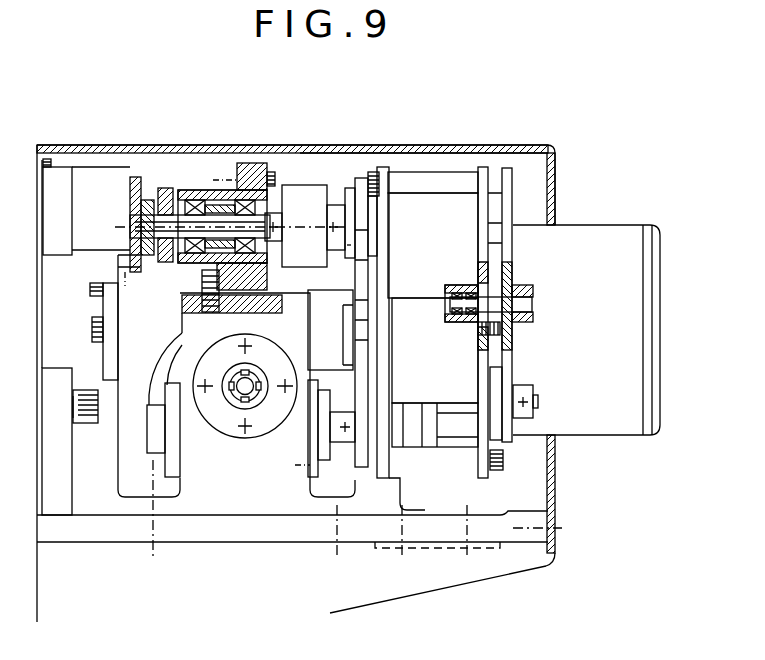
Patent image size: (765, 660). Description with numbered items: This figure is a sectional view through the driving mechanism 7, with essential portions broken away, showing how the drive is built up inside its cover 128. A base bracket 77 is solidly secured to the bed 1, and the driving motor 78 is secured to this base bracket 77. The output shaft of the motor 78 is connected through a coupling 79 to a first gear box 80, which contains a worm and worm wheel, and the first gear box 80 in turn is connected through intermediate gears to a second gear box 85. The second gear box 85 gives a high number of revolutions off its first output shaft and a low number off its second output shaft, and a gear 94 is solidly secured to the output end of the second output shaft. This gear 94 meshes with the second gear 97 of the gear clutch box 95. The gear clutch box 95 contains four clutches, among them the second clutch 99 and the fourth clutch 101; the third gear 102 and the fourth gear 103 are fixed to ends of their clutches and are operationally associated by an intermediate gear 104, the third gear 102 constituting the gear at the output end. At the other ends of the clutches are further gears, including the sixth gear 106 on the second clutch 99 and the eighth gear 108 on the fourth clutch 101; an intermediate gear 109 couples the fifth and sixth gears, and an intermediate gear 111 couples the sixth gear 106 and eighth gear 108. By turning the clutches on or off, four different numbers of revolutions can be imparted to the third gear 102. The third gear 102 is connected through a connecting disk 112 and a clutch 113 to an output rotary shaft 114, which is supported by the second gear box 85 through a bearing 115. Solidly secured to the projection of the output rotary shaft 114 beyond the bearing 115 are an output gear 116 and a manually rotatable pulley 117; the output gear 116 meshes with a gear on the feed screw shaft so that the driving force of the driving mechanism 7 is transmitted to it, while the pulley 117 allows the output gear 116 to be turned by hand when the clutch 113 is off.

The bed 1 is at (444, 578).
The driving mechanism 7 is at (409, 130).
The base bracket 77 is at (517, 515).
The driving motor 78 is at (613, 232).
The coupling 79 is at (322, 340).
The first gear box 80 is at (122, 322).
The second gear box 85 is at (198, 340).
The gear 94 is at (360, 452).
The gear clutch box 95 is at (506, 176).
The second gear 97 is at (363, 372).
The second clutch 99 is at (458, 385).
The fourth clutch 101 is at (461, 200).
The third gear 102 is at (362, 180).
The fourth gear 103 is at (362, 228).
The intermediate gear 104 is at (362, 283).
The sixth gear 106 is at (508, 362).
The eighth gear 108 is at (508, 193).
The intermediate gear 109 is at (510, 428).
The intermediate gear 111 is at (500, 288).
The connecting disk 112 is at (351, 189).
The clutch 113 is at (301, 186).
The output rotary shaft 114 is at (212, 218).
The bearing 115 is at (213, 190).
The output gear 116 is at (163, 187).
The manually rotatable pulley 117 is at (150, 183).
The cover 128 is at (432, 147).